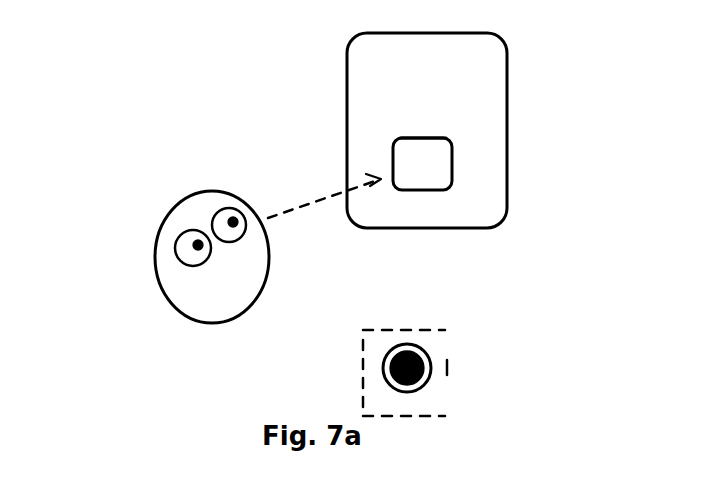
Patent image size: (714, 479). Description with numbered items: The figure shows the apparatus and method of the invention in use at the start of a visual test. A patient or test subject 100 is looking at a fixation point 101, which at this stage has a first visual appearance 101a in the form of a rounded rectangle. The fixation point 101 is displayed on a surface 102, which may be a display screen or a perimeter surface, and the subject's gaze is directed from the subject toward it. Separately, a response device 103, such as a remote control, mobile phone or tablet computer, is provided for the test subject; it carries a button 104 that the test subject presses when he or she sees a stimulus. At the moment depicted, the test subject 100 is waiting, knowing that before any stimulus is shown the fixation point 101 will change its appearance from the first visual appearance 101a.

The patient or test subject 100 is at (170, 232).
The fixation point 101 is at (440, 166).
The first visual appearance 101a is at (408, 137).
The surface 102 is at (495, 78).
The response device 103 is at (445, 393).
The button 104 is at (418, 353).